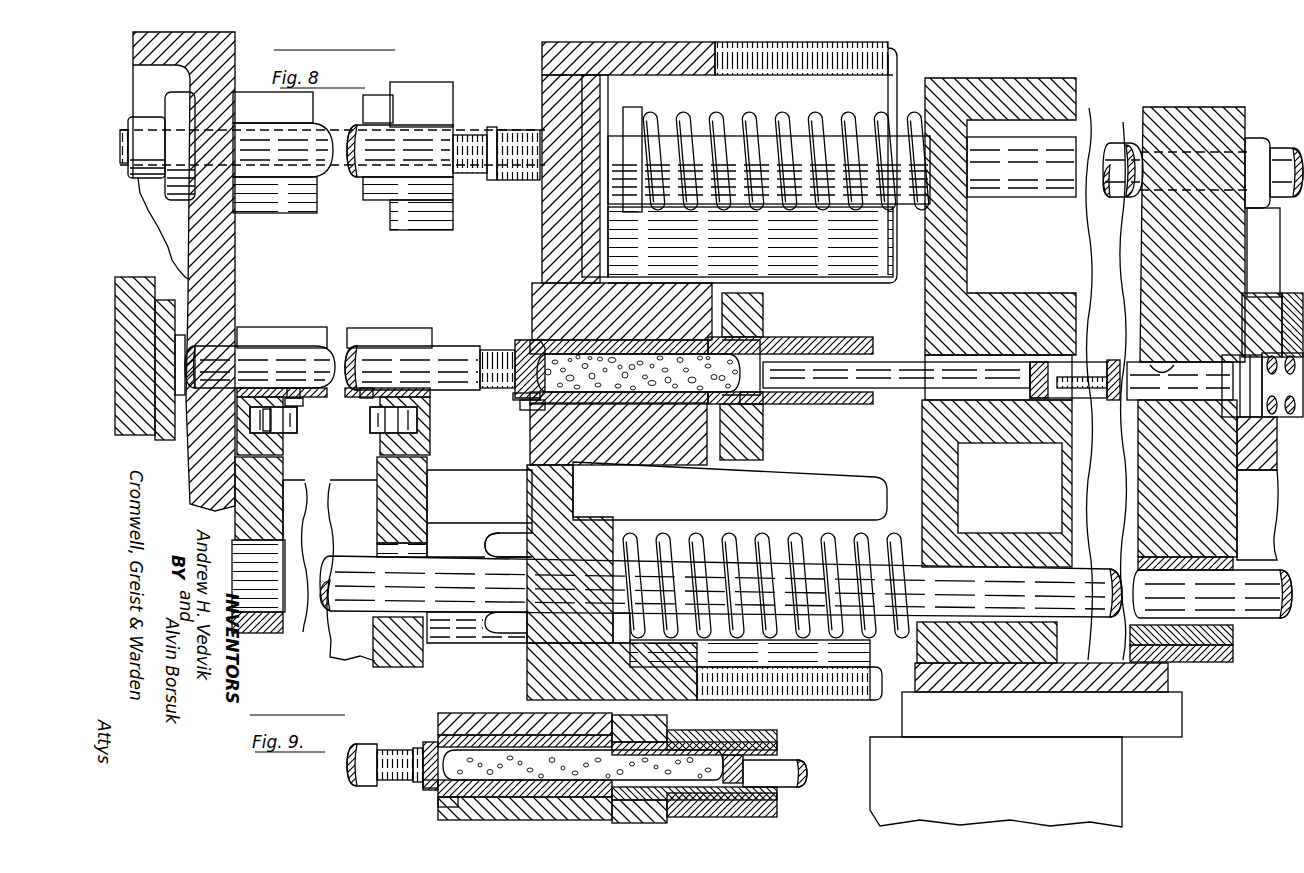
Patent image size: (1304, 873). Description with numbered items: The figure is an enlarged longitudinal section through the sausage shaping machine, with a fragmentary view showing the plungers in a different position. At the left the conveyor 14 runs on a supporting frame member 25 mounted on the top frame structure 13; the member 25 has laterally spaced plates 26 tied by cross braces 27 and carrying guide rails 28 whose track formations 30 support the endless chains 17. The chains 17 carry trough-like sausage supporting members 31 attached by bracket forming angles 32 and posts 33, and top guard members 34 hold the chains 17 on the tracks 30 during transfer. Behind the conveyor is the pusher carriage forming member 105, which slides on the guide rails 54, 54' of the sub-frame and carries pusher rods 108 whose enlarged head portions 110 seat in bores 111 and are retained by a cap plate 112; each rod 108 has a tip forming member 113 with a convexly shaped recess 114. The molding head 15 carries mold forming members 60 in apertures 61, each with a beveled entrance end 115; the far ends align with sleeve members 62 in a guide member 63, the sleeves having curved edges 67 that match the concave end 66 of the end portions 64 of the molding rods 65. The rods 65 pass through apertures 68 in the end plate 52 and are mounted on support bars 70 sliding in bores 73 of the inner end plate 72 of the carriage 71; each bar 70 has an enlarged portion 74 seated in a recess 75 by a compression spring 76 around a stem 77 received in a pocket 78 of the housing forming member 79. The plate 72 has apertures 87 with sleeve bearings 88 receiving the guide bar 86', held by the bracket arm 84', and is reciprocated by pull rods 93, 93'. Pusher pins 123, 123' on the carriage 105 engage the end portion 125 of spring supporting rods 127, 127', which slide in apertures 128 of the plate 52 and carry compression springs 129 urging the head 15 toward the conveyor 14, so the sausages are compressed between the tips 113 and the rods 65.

In FIG. 8, the top frame structure 13 is at (1000, 795).
In FIG. 8, the conveyor 14 is at (302, 327).
In FIG. 8, the molding head 15 is at (665, 456).
In FIG. 8, the endless chains 17 is at (371, 418).
In FIG. 8, the supporting frame member 25 is at (430, 486).
In FIG. 8, the plates 26 is at (376, 470).
In FIG. 8, the cross braces 27 is at (330, 640).
In FIG. 8, the guide rails 28 is at (284, 447).
In FIG. 8, the track formations 30 is at (272, 428).
In FIG. 8, the sausage supporting members 31 is at (412, 328).
In FIG. 8, the bracket forming angles 32 is at (300, 408).
In FIG. 8, the posts 33 is at (301, 396).
In FIG. 8, the top guard members 34 is at (265, 396).
In FIG. 8, the end plate 52 is at (968, 82).
In FIG. 8, the guide rail 54 is at (442, 93).
In FIG. 8, the guide rail 54' is at (479, 556).
In FIG. 8, the mold forming members 60 is at (605, 396).
In FIG. 9, the mold forming members 60 is at (540, 750).
In FIG. 8, the apertures 61 is at (545, 338).
In FIG. 9, the apertures 61 is at (490, 735).
In FIG. 8, the sleeve members 62 is at (842, 345).
In FIG. 9, the sleeve members 62 is at (716, 748).
In FIG. 8, the guide member 63 is at (768, 318).
In FIG. 8, the end portions 64 is at (760, 358).
In FIG. 9, the end portions 64 is at (760, 762).
In FIG. 8, the molding rods 65 is at (890, 362).
In FIG. 9, the molding rods 65 is at (795, 789).
In FIG. 8, the concave end 66 is at (764, 412).
In FIG. 9, the concave end 66 is at (745, 772).
In FIG. 8, the curved inner peripheral edge 67 is at (758, 447).
In FIG. 9, the curved inner peripheral edge 67 is at (640, 742).
In FIG. 8, the apertures 68 is at (1005, 340).
In FIG. 8, the support bars 70 is at (1122, 396).
In FIG. 8, the carriage 71 is at (1250, 116).
In FIG. 8, the inner end plate 72 is at (1146, 268).
In FIG. 8, the bores 73 is at (1160, 364).
In FIG. 8, the enlarged portion 74 is at (1207, 485).
In FIG. 8, the recess 75 is at (1225, 360).
In FIG. 8, the compression spring 76 is at (1275, 418).
In FIG. 8, the stem 77 is at (1265, 294).
In FIG. 8, the pocket 78 is at (1291, 300).
In FIG. 8, the housing forming member 79 is at (1257, 515).
In FIG. 8, the angular bracket arm 84' is at (1105, 370).
In FIG. 8, the guide bar 86' is at (1212, 606).
In FIG. 8, the apertures 87 is at (1210, 646).
In FIG. 8, the sleeve bearings 88 is at (1226, 656).
In FIG. 8, the pull rod 93 is at (1203, 160).
In FIG. 8, the pull rod 93' is at (721, 586).
In FIG. 8, the carriage forming member 105 is at (234, 245).
In FIG. 8, the pusher rods 108 is at (446, 346).
In FIG. 9, the pusher rods 108 is at (358, 786).
In FIG. 8, the enlarged head portions 110 is at (180, 320).
In FIG. 8, the bores 111 is at (186, 342).
In FIG. 8, the cap plate 112 is at (124, 277).
In FIG. 8, the tip forming members 113 is at (528, 342).
In FIG. 9, the tip forming members 113 is at (428, 745).
In FIG. 8, the convexly shaped recess 114 is at (535, 410).
In FIG. 9, the convexly shaped recess 114 is at (445, 802).
In FIG. 8, the beveled entrance end 115 is at (523, 399).
In FIG. 9, the beveled entrance end 115 is at (430, 785).
In FIG. 8, the pusher pin 123 is at (391, 162).
In FIG. 8, the pusher pin 123' is at (507, 507).
In FIG. 8, the rearwardly projecting end portion 125 is at (470, 138).
In FIG. 8, the spring supporting rod 127 is at (786, 149).
In FIG. 8, the spring supporting rod 127' is at (761, 586).
In FIG. 8, the apertures 128 is at (955, 204).
In FIG. 8, the compression spring 129 is at (818, 126).